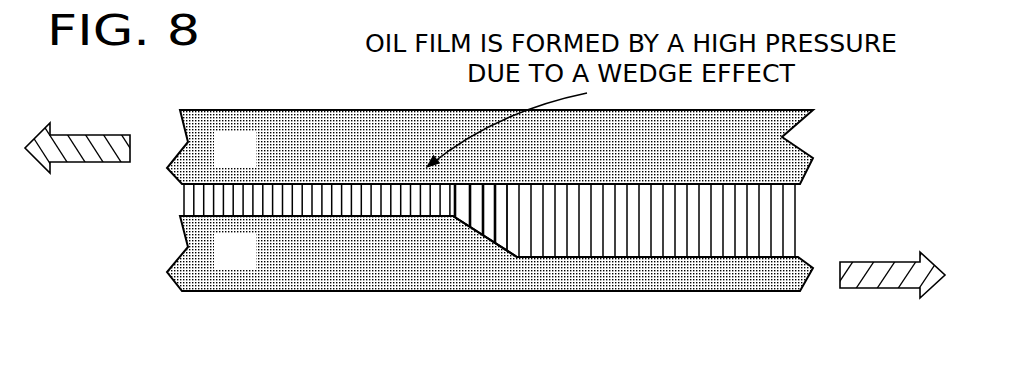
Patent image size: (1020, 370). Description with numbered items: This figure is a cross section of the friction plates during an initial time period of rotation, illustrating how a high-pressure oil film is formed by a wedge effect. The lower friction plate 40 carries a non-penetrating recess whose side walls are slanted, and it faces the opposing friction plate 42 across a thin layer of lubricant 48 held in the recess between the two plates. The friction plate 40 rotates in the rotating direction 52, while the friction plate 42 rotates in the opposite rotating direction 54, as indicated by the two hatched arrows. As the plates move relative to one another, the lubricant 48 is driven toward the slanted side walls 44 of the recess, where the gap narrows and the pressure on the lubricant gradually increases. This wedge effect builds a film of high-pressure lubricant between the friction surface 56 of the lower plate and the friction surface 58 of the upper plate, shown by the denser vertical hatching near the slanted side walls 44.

The lower friction plate 40 is at (251, 266).
The friction plate 42 is at (251, 162).
The slanted side walls 44 is at (490, 238).
The lubricant 48 is at (797, 233).
The rotating direction 52 is at (892, 288).
The rotating direction 54 is at (98, 135).
The friction surface 56 is at (310, 216).
The friction surface 58 is at (343, 184).